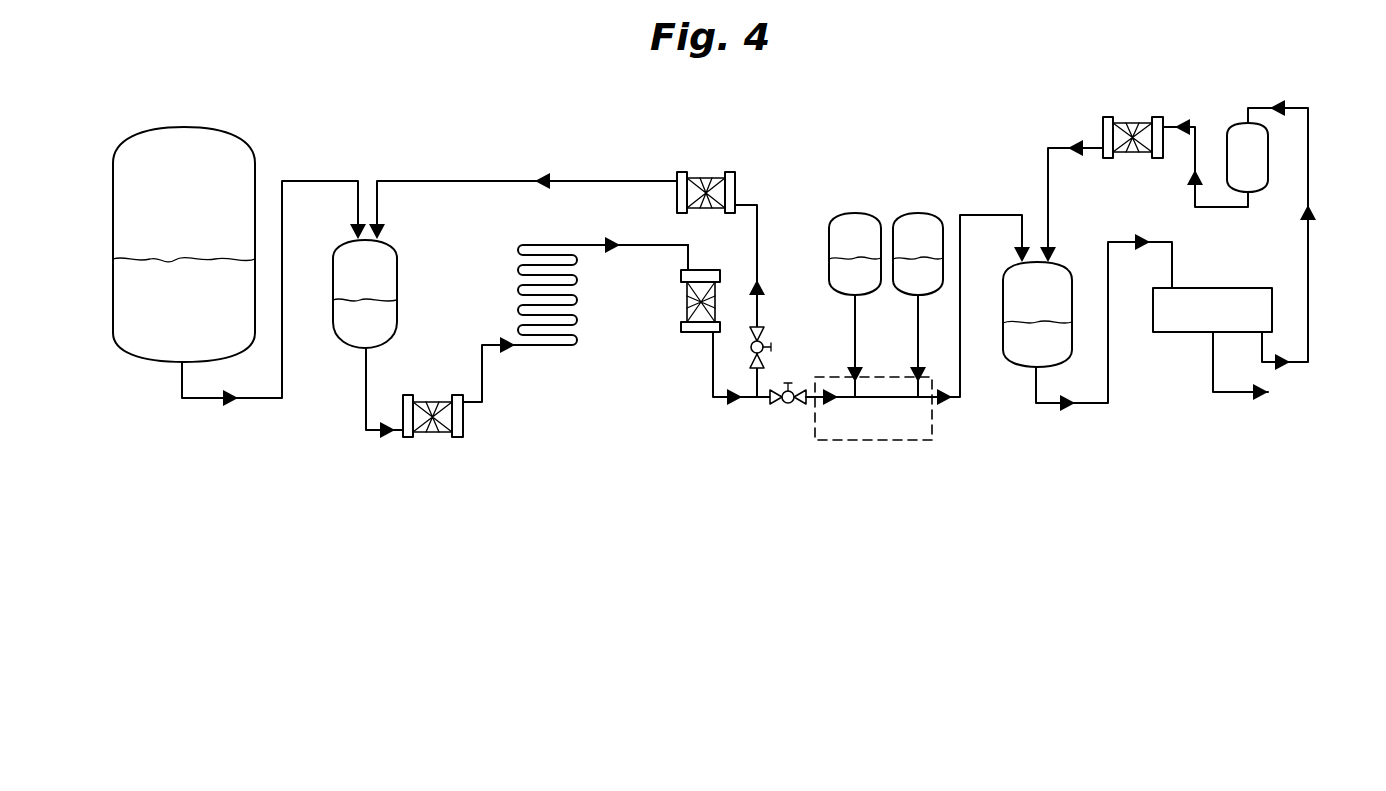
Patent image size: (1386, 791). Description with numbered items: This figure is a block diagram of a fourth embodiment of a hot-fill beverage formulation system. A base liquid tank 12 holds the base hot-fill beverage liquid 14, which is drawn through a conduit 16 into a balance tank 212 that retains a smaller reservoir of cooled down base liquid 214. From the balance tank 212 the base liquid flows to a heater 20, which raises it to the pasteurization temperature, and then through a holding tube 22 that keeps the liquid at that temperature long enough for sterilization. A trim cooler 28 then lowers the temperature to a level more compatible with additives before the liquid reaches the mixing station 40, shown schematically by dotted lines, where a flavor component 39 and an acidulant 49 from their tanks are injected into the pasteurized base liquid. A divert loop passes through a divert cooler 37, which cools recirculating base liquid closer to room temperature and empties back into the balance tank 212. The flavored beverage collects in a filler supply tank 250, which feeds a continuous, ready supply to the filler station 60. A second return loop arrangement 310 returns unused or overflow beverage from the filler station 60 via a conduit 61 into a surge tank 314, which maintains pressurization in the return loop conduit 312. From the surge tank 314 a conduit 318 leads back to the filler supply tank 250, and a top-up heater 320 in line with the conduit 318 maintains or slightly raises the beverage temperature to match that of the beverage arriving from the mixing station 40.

The base liquid tank 12 is at (205, 130).
The base hot-fill beverage liquid 14 is at (194, 340).
The conduit 16 is at (245, 400).
The return loop conduit 312 is at (487, 181).
The cooled down base liquid 214 is at (387, 336).
The balance tank 212 is at (347, 350).
The heater 20 is at (440, 437).
The holding tube 22 is at (537, 348).
The trim cooler 28 is at (681, 297).
The divert cooler 37 is at (714, 186).
The mixing station 40 is at (852, 441).
The flavor component 39 is at (868, 286).
The acidulant 49 is at (931, 286).
The filler supply tank 250 is at (1020, 358).
The filler station 60 is at (1185, 333).
The conduit 61 is at (1213, 384).
The surge tank 314 is at (1232, 125).
The second return loop arrangement 310 is at (1253, 88).
The top-up heater 320 is at (1130, 122).
The conduit 318 is at (1090, 148).